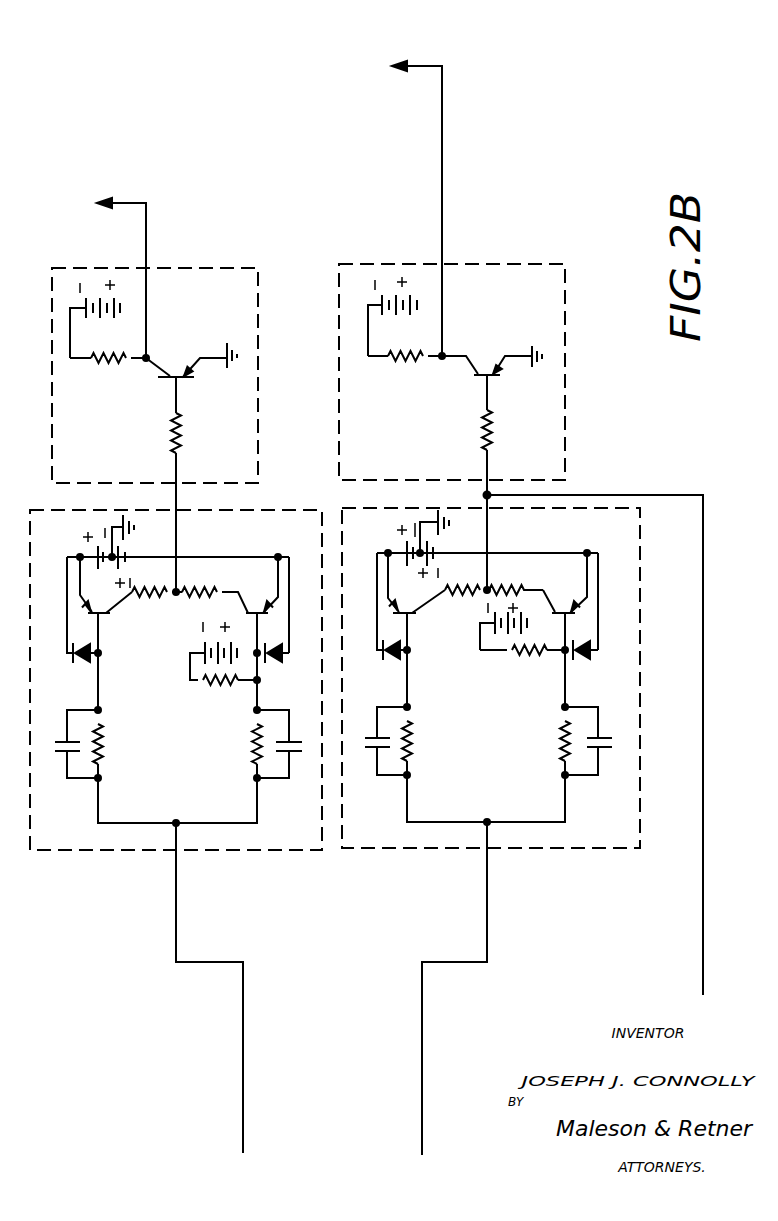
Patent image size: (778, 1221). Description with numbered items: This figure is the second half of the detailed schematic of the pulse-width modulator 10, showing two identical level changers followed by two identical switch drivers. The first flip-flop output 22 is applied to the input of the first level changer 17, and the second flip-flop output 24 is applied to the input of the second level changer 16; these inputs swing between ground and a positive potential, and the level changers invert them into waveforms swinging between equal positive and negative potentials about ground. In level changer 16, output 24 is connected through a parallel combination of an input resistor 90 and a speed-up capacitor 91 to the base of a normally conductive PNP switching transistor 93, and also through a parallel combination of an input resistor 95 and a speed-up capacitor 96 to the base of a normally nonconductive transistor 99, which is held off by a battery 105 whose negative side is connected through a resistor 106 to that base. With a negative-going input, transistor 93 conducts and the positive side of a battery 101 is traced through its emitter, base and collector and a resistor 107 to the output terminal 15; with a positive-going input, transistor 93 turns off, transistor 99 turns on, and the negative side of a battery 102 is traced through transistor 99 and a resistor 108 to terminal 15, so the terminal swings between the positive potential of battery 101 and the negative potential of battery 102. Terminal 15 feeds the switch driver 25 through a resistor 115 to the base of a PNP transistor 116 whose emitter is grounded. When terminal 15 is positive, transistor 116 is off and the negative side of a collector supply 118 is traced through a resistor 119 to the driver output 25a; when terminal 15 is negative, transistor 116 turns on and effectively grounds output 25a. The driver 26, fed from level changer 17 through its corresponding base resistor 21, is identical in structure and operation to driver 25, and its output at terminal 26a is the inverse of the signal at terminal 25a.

The pulse-width modulator 10 is at (592, 920).
The output terminal 15 is at (490, 494).
The second level changer 16 is at (618, 800).
The first level changer 17 is at (302, 815).
The base resistor 21 is at (176, 450).
The first flip-flop output 22 is at (243, 1065).
The second flip-flop output 24 is at (422, 1038).
The switch driver 25 is at (549, 290).
The output terminal of driver 25a is at (442, 198).
The switch driver 26 is at (243, 298).
The output terminal of driver 26a is at (146, 232).
The input resistor 90 is at (412, 742).
The speed-up capacitor 91 is at (368, 750).
The switching transistor 93 is at (414, 615).
The input resistor 95 is at (563, 735).
The speed-up capacitor 96 is at (605, 736).
The transistor 99 is at (572, 608).
The battery 101 is at (405, 545).
The battery 102 is at (434, 545).
The battery 105 is at (481, 652).
The resistor 106 is at (545, 652).
The resistor 107 is at (480, 594).
The resistor 108 is at (500, 582).
The resistor 115 is at (482, 420).
The PNP transistor 116 is at (487, 370).
The collector supply 118 is at (389, 300).
The resistor 119 is at (400, 360).